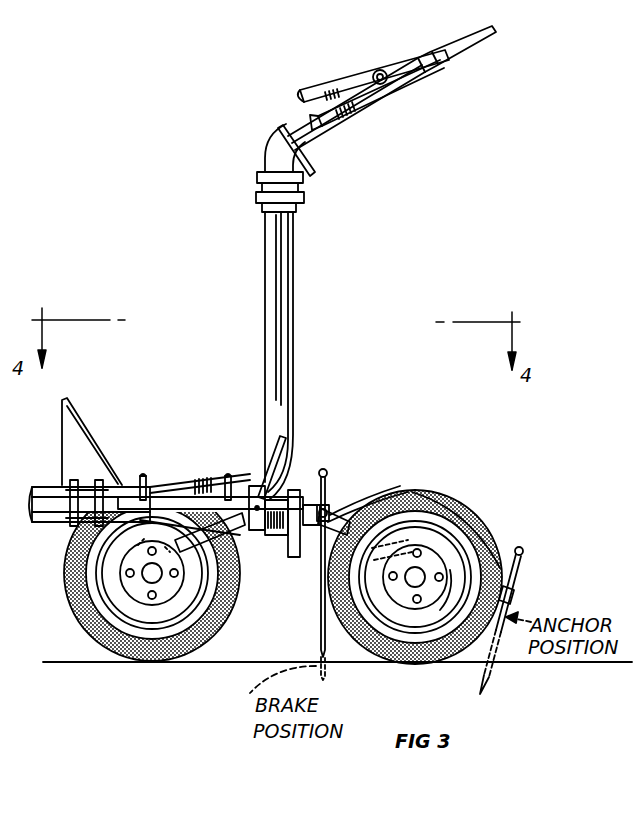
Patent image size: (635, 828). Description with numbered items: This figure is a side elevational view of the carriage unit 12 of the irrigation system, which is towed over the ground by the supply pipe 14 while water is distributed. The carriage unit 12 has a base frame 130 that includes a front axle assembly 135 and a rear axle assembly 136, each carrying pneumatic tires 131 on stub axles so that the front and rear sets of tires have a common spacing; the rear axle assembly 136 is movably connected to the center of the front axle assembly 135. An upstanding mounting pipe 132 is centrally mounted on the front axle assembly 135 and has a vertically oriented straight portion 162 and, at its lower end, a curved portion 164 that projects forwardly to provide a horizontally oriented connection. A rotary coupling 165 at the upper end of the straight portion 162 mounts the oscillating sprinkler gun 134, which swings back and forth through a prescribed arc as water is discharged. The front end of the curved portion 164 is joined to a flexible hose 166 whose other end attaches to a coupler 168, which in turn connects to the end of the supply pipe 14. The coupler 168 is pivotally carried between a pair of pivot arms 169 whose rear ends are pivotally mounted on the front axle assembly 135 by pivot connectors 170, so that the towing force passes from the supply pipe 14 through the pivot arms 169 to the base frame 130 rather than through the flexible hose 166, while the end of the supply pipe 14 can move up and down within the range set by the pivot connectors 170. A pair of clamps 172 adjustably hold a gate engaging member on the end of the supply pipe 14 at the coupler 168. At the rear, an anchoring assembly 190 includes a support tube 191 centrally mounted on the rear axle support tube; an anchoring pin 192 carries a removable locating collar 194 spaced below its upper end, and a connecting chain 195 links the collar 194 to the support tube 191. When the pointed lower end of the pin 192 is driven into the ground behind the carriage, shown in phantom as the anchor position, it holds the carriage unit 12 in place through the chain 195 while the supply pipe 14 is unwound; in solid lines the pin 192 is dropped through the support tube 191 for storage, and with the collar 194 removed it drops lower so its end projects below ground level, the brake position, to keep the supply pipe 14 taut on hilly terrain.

The carriage unit 12 is at (178, 240).
The supply pipe 14 is at (52, 522).
The base frame 130 is at (262, 553).
The pneumatic tires 131 is at (72, 577).
The mounting pipe 132 is at (300, 262).
The sprinkler gun 134 is at (391, 94).
The front axle assembly 135 is at (240, 492).
The rear axle assembly 136 is at (295, 558).
The straight portion 162 is at (290, 308).
The curved portion 164 is at (262, 485).
The rotary coupling 165 is at (296, 190).
The flexible hose 166 is at (172, 492).
The coupler 168 is at (106, 484).
The pivot arms 169 is at (182, 494).
The pivot connectors 170 is at (292, 457).
The clamps 172 is at (76, 480).
The anchoring assembly 190 is at (330, 478).
The support tube 191 is at (358, 500).
The anchoring pin 192 is at (320, 616).
The locating collar 194 is at (330, 508).
The connecting chain 195 is at (402, 492).